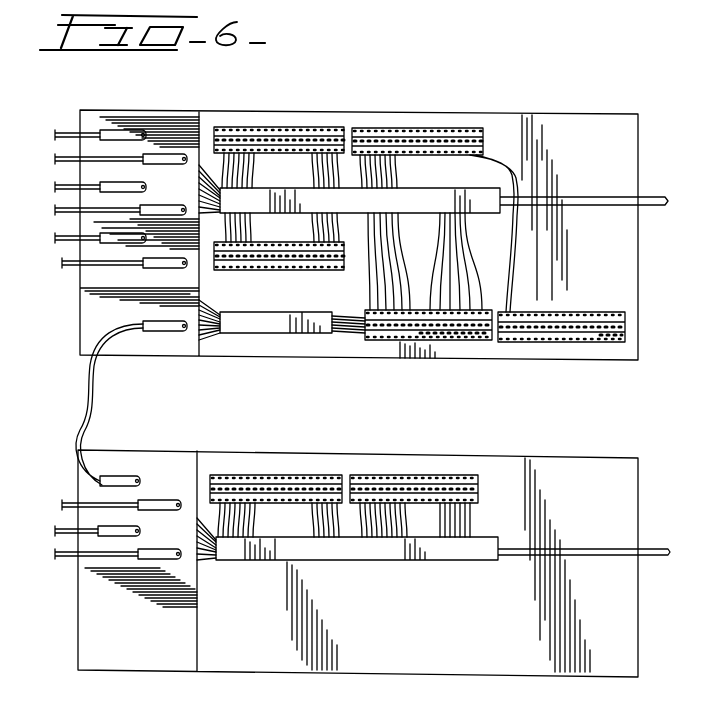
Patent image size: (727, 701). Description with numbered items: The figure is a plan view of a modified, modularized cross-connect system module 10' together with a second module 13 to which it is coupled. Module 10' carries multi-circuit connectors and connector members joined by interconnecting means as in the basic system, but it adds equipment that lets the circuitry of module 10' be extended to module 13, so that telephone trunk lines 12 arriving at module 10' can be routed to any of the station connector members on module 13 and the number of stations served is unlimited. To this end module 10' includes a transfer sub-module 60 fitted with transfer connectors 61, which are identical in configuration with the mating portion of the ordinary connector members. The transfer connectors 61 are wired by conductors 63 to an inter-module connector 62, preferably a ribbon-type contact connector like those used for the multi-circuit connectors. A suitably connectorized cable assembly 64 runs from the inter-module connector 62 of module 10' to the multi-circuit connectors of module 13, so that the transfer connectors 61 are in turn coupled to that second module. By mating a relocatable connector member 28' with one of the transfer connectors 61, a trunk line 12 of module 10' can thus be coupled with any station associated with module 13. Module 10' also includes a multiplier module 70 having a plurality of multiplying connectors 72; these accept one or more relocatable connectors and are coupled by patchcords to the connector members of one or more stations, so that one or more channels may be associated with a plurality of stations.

The modularized cross-connect system module 10' is at (359, 210).
The telephone trunk lines 12 is at (64, 132).
The module 13 is at (448, 455).
The relocatable connector member 28' is at (370, 232).
The transfer sub-module 60 is at (395, 340).
The transfer connectors 61 is at (408, 336).
The inter-module connector 62 is at (155, 332).
The conductors 63 is at (352, 312).
The connectorized cable assembly 64 is at (84, 416).
The multiplier module 70 is at (600, 343).
The multiplying connectors 72 is at (626, 333).